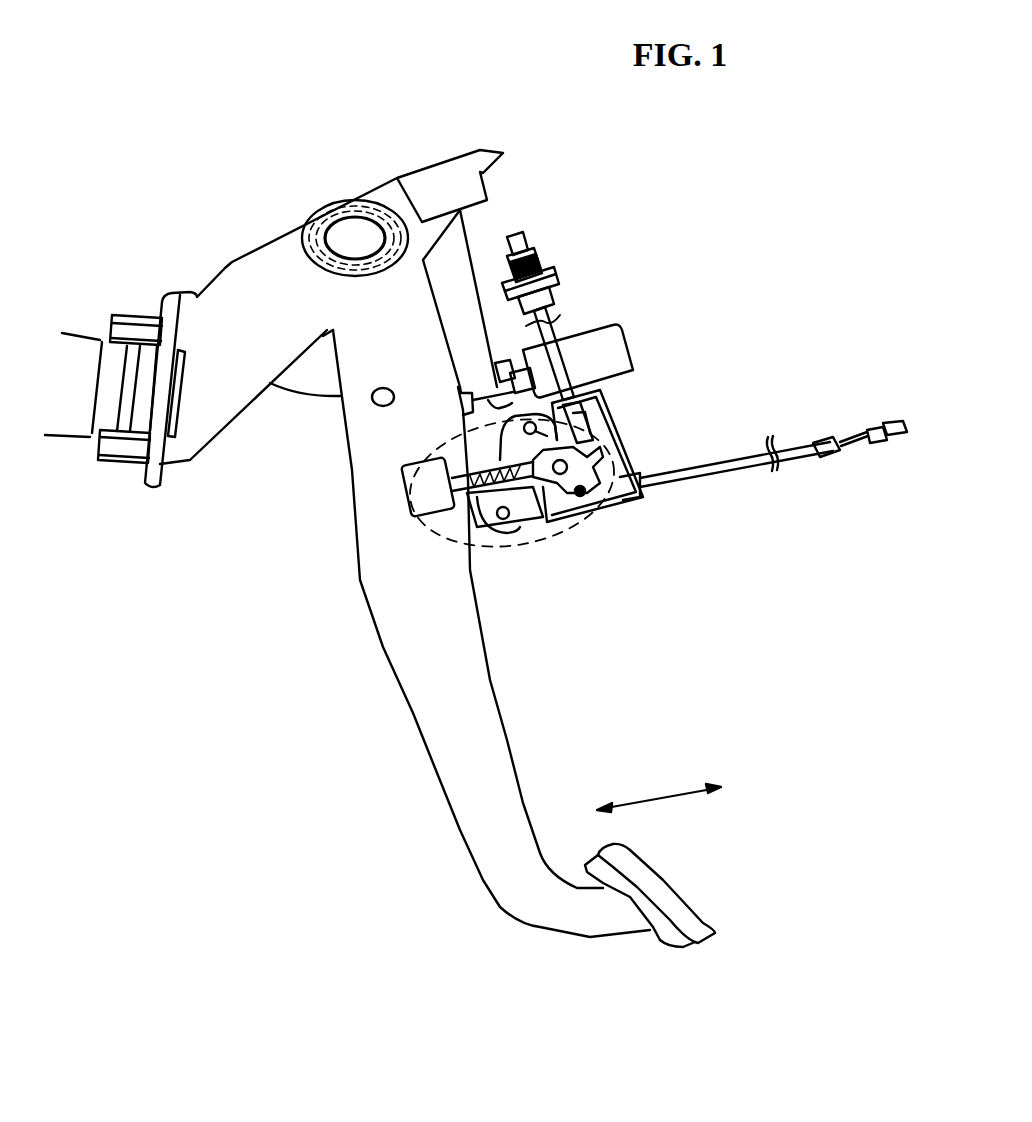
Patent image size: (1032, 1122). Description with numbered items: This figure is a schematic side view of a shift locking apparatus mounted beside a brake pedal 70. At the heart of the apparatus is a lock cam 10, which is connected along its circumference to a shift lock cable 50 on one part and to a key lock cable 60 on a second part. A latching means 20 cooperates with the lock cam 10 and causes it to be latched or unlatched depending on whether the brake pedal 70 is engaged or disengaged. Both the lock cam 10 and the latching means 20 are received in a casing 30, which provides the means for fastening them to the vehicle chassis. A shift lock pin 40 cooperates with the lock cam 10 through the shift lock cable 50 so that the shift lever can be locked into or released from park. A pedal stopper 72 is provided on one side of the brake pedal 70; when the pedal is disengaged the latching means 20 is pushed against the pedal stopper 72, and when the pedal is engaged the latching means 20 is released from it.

The lock cam 10 is at (623, 457).
The latching means 20 is at (517, 523).
The casing 30 is at (617, 510).
The shift lock pin 40 is at (513, 234).
The shift lock cable 50 is at (565, 327).
The key lock cable 60 is at (799, 456).
The brake pedal 70 is at (440, 705).
The pedal stopper 72 is at (405, 488).